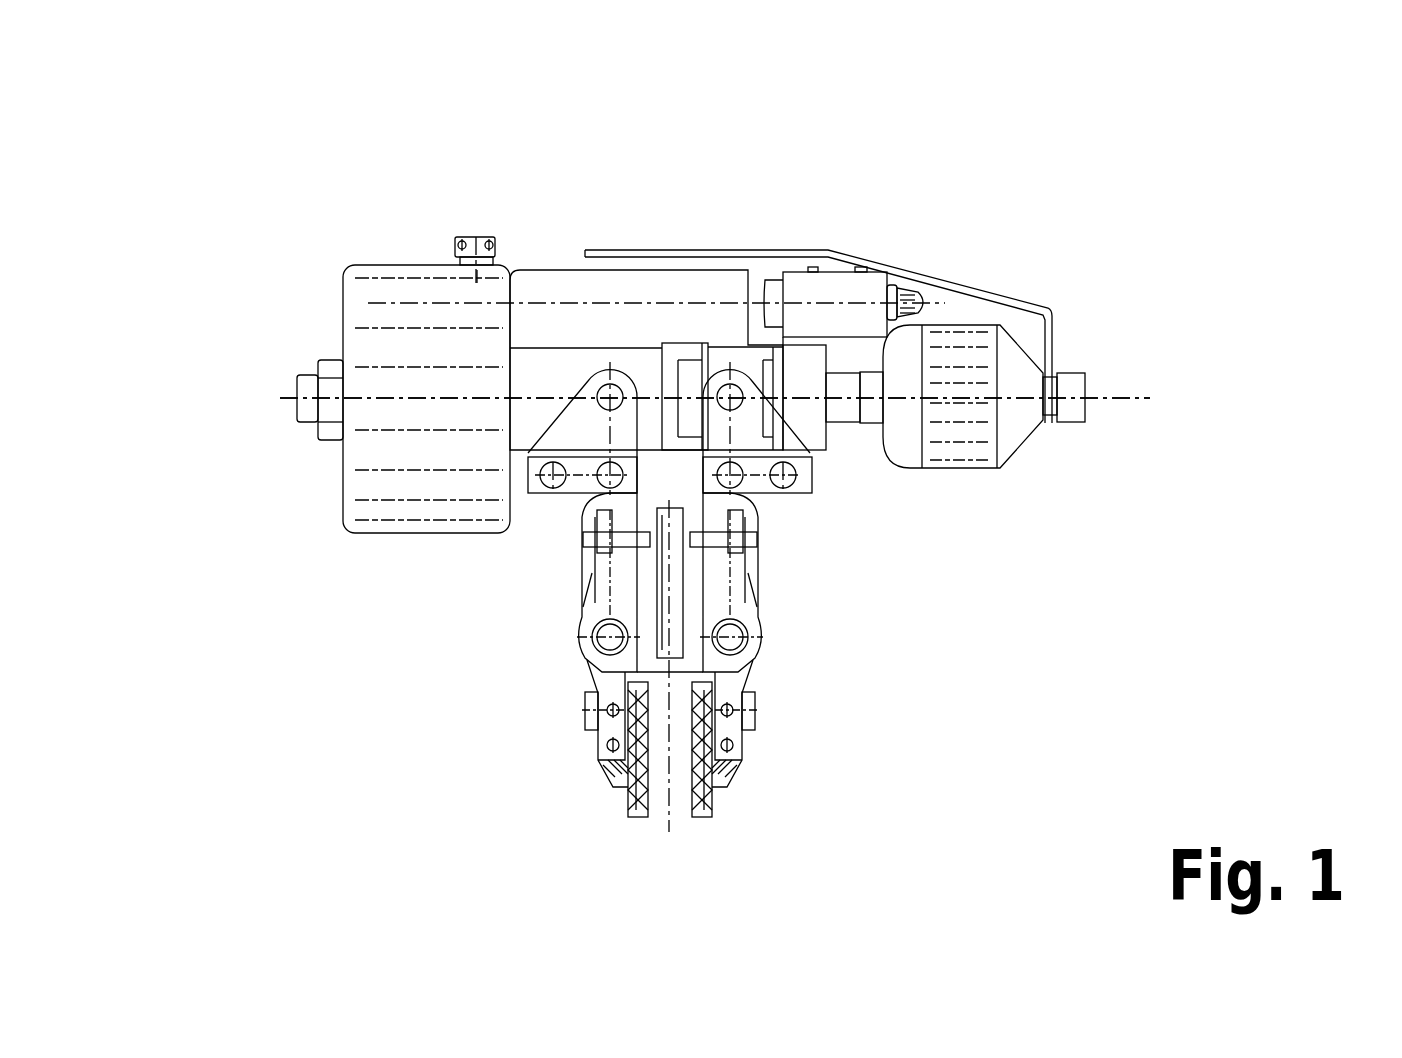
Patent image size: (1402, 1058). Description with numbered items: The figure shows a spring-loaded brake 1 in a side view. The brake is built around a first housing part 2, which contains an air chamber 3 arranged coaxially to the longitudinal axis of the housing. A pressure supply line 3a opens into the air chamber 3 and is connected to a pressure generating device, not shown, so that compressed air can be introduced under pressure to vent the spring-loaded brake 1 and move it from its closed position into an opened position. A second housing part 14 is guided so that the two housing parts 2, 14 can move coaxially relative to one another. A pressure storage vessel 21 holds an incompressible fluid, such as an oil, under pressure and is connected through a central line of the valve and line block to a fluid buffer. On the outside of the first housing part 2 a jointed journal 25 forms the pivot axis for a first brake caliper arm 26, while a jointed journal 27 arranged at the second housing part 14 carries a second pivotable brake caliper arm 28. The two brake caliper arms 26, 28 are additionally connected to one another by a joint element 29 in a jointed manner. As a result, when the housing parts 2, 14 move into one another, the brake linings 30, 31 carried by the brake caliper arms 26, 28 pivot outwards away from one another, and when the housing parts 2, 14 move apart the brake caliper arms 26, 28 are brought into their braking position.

The spring-loaded brake 1 is at (310, 230).
The first housing part 2 is at (510, 433).
The air chamber 3 is at (370, 480).
The pressure supply line 3a is at (470, 245).
The second housing part 14 is at (770, 357).
The pressure storage vessel 21 is at (1013, 362).
The jointed journal 25 is at (608, 393).
The first brake caliper arm 26 is at (578, 500).
The jointed journal 27 is at (730, 393).
The second brake caliper arm 28 is at (752, 498).
The joint element 29 is at (695, 570).
The brake lining 30 is at (615, 772).
The brake lining 31 is at (733, 778).